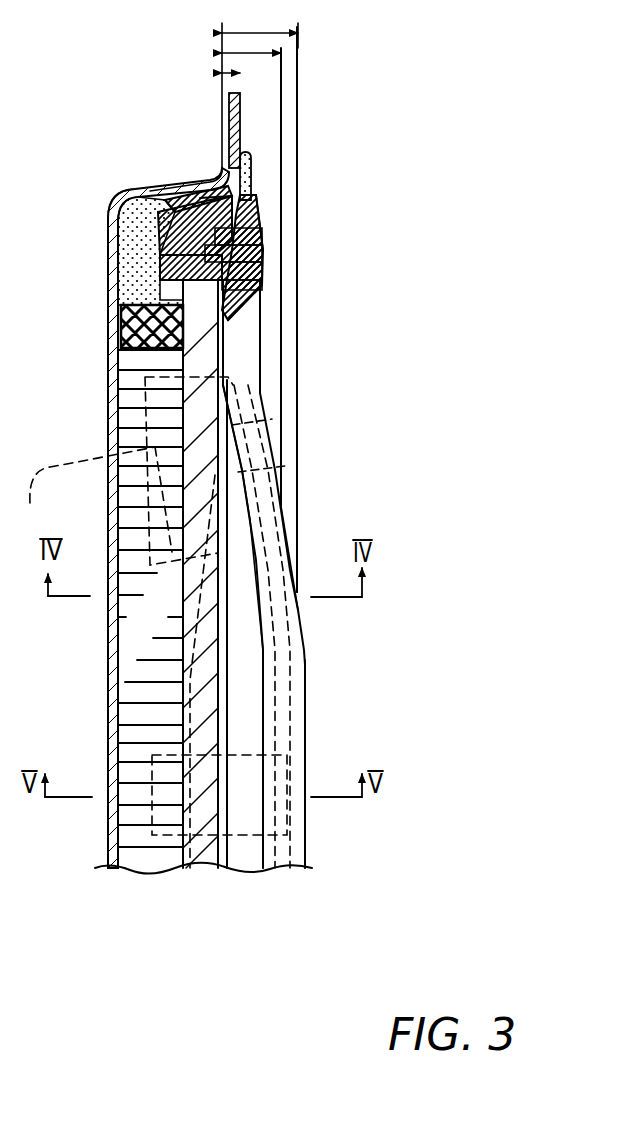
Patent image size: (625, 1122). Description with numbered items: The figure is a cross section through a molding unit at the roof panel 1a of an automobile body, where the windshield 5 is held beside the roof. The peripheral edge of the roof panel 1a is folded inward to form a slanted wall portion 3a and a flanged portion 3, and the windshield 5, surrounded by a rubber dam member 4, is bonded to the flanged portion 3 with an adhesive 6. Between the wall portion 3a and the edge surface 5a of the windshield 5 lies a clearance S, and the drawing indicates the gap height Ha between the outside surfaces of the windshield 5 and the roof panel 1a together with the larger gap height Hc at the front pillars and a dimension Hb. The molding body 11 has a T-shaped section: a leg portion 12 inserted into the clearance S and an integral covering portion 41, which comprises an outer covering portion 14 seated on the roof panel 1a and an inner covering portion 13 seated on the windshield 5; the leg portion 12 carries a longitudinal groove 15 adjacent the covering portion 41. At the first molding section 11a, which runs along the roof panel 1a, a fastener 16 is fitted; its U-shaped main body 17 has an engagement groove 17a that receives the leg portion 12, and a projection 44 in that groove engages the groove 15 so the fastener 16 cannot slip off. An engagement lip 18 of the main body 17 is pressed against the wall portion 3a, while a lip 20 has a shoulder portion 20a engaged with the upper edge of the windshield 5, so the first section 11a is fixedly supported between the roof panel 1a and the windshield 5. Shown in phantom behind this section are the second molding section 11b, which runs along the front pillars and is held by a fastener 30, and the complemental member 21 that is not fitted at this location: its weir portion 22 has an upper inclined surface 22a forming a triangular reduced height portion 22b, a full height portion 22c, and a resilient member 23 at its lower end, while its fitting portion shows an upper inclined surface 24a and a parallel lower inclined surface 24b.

The roof panel 1a is at (250, 122).
The flanged portion 3 is at (110, 275).
The slanted wall portion 3a is at (157, 183).
The dam member 4 is at (137, 352).
The windshield 5 is at (180, 472).
The edge surface 5a is at (262, 297).
The adhesive 6 is at (118, 233).
The molding body 11 is at (289, 309).
The first molding section 11a is at (268, 222).
The second molding section 11b is at (287, 508).
The leg portion 12 is at (117, 197).
The inner covering portion 13 is at (258, 315).
The outer covering portion 14 is at (253, 167).
The groove 15 is at (262, 242).
The fastener 16 is at (122, 255).
The main body 17 is at (108, 294).
The engagement groove 17a is at (262, 258).
The engagement lip 18 is at (197, 197).
The lip 20 is at (118, 335).
The shoulder portion 20a is at (188, 285).
The complemental member 21 is at (252, 860).
The weir portion 22 is at (264, 574).
The upper inclined surface 22a is at (238, 427).
The reduced height portion 22b is at (242, 568).
The full height portion 22c is at (243, 690).
The resilient member 23 is at (222, 631).
The upper inclined surface 24a is at (261, 626).
The lower inclined surface 24b is at (91, 490).
The fastener 30 is at (243, 470).
The covering portion 41 is at (262, 282).
The projection 44 is at (262, 197).
The clearance S is at (222, 197).
The gap height Ha is at (236, 73).
The dimension Hb is at (258, 53).
The gap height Hc is at (265, 33).